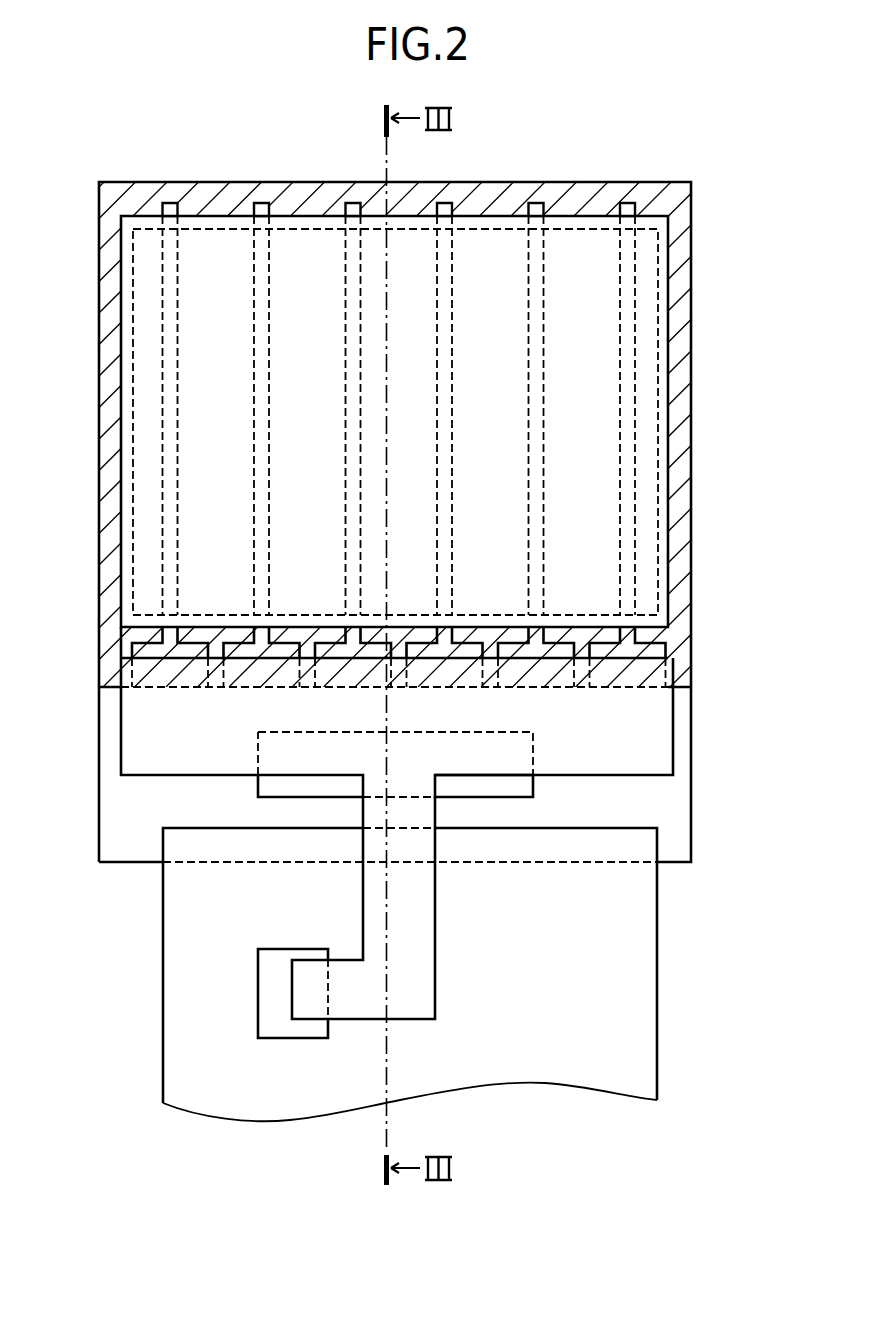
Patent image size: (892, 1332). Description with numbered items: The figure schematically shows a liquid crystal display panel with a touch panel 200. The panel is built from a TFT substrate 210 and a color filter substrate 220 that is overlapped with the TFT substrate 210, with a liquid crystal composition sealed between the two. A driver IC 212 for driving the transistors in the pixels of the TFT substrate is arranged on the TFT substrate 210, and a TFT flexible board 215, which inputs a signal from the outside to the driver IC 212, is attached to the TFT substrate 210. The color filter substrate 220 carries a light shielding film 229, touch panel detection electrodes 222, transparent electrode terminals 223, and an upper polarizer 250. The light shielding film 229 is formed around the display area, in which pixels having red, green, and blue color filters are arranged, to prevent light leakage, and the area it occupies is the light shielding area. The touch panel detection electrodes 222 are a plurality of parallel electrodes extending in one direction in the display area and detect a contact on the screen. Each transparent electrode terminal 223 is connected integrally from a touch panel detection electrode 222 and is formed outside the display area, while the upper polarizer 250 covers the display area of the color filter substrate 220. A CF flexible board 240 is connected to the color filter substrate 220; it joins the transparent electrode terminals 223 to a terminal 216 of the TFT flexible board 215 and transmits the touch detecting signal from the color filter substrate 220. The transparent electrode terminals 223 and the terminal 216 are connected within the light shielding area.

The liquid crystal display panel with a touch panel 200 is at (612, 124).
The TFT substrate 210 is at (691, 817).
The driver IC 212 is at (258, 786).
The TFT flexible board 215 is at (657, 988).
The terminal 216 is at (258, 994).
The color filter substrate 220 is at (691, 240).
The touch panel detection electrodes 222 is at (628, 585).
The transparent electrode terminals 223 is at (668, 648).
The light shielding film 229 is at (658, 405).
The CF flexible board 240 is at (673, 730).
The upper polarizer 250 is at (669, 323).